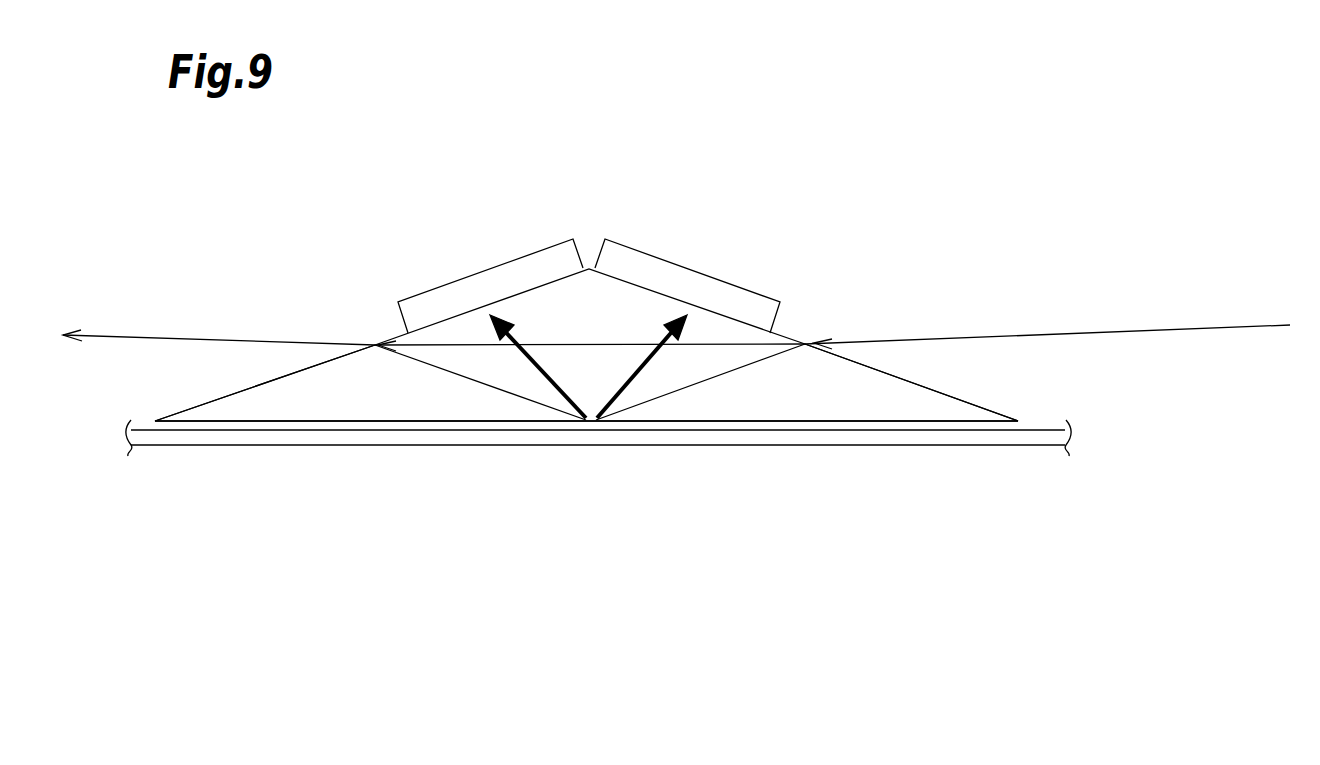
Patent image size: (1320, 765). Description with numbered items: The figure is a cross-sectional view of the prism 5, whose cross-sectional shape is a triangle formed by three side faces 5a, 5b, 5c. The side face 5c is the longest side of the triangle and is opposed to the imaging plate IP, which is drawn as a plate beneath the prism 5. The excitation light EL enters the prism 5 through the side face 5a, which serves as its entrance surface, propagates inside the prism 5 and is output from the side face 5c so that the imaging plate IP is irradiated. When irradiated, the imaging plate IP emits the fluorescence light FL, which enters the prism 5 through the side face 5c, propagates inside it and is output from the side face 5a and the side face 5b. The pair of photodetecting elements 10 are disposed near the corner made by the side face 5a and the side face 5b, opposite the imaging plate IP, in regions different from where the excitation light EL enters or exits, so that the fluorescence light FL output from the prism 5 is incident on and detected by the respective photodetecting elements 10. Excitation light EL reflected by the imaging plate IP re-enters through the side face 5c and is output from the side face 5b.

The prism 5 is at (937, 390).
The side face 5a is at (887, 372).
The side face 5b is at (257, 384).
The side face 5c is at (815, 420).
The photodetecting element 10 is at (495, 262).
The imaging plate IP is at (1036, 428).
The excitation light EL is at (1135, 331).
The fluorescence light FL is at (528, 353).